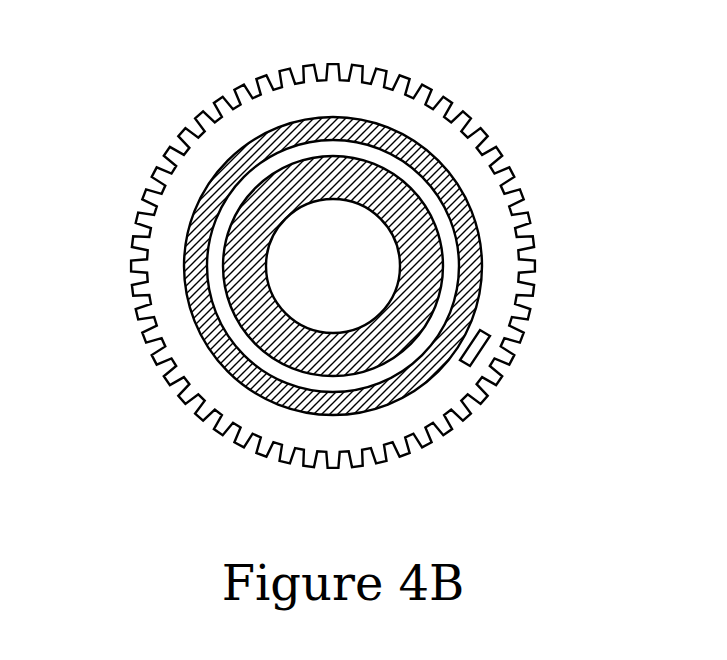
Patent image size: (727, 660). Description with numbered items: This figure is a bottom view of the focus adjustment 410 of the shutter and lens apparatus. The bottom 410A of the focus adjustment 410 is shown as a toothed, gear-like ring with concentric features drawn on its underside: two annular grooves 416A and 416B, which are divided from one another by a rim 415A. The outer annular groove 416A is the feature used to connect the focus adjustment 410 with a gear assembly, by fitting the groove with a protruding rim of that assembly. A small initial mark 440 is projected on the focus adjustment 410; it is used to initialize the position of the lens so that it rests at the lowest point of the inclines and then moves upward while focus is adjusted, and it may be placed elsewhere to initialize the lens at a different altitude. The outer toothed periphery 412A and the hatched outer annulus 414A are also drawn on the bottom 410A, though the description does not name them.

The bottom of the focus adjustment 410A is at (489, 94).
The focus adjustment 410 is at (199, 122).
The gear teeth 412A is at (250, 408).
The outer ring 414A is at (477, 228).
The annular groove 416A is at (478, 276).
The rim 415A is at (410, 356).
The annular groove 416B is at (248, 278).
The initial mark 440 is at (470, 352).